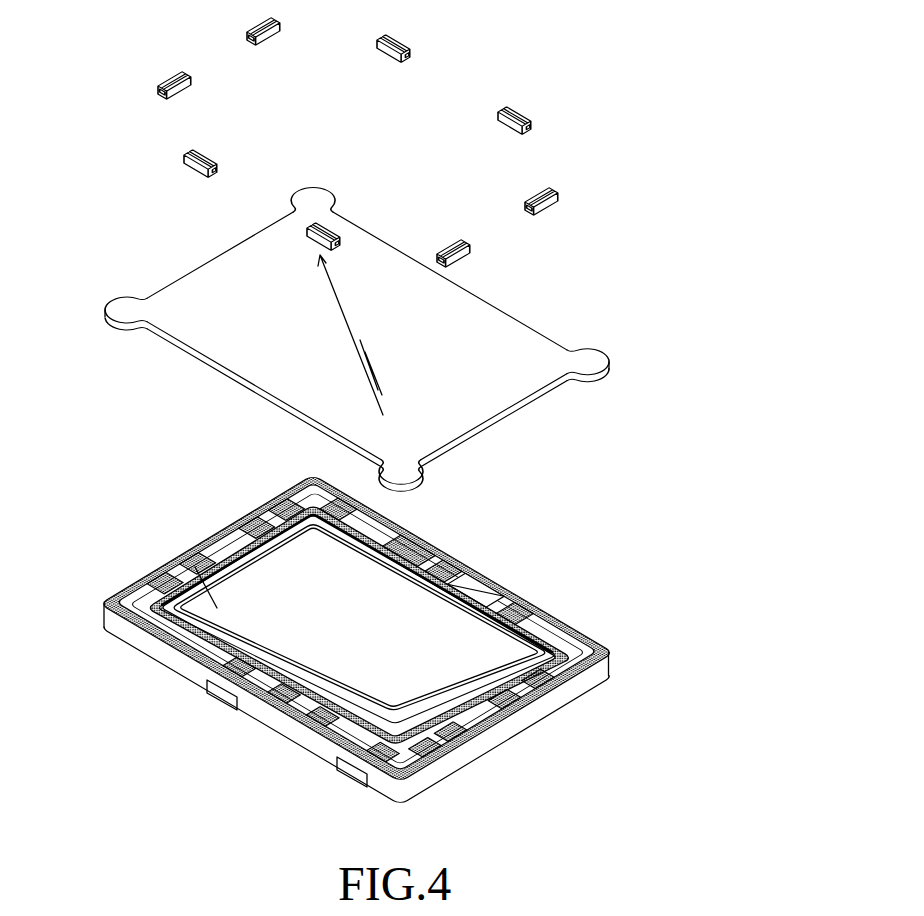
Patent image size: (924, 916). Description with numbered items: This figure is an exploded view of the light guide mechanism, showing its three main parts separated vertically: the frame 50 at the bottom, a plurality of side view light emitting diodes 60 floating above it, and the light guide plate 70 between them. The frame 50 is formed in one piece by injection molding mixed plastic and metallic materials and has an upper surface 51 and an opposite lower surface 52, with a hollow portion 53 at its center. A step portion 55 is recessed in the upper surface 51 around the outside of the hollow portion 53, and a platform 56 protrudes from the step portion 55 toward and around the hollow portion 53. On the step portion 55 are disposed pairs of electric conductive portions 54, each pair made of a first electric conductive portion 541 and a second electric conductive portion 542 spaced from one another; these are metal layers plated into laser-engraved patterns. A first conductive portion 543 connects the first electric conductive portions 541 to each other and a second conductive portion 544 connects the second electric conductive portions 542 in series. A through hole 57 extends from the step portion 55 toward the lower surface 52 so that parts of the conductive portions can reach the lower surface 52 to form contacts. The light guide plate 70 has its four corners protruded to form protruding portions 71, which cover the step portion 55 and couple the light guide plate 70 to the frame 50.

The frame 50 is at (283, 727).
The upper surface 51 is at (230, 520).
The lower surface 52 is at (161, 660).
The hollow portion 53 is at (164, 560).
The pair of electric conductive portions 54 is at (562, 521).
The first electric conductive portion 541 is at (537, 603).
The second electric conductive portion 542 is at (513, 588).
The first conductive portion 543 is at (610, 645).
The second conductive portion 544 is at (480, 717).
The step portion 55 is at (130, 607).
The platform 56 is at (243, 568).
The through hole 57 is at (497, 600).
The side view light emitting diode 60 is at (163, 81).
The light guide plate 70 is at (467, 413).
The protruding portion 71 is at (317, 204).